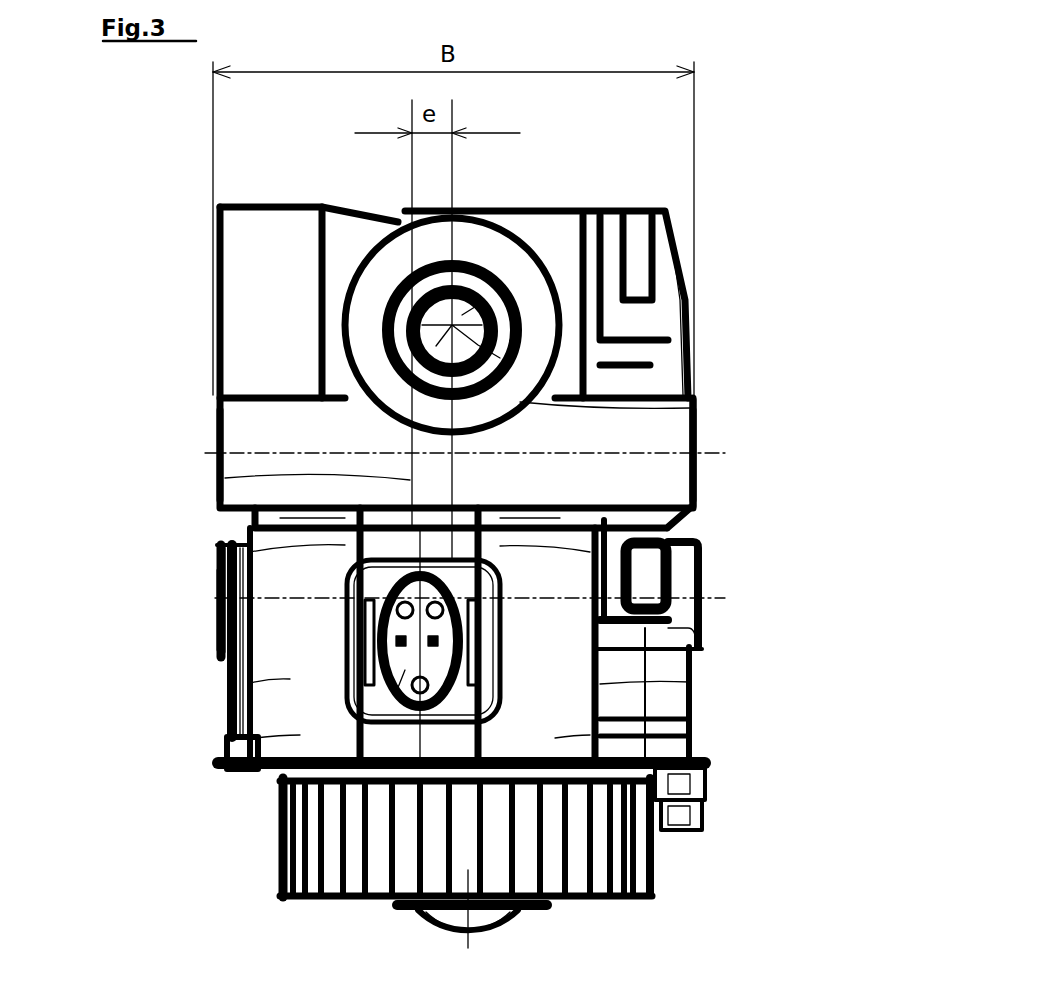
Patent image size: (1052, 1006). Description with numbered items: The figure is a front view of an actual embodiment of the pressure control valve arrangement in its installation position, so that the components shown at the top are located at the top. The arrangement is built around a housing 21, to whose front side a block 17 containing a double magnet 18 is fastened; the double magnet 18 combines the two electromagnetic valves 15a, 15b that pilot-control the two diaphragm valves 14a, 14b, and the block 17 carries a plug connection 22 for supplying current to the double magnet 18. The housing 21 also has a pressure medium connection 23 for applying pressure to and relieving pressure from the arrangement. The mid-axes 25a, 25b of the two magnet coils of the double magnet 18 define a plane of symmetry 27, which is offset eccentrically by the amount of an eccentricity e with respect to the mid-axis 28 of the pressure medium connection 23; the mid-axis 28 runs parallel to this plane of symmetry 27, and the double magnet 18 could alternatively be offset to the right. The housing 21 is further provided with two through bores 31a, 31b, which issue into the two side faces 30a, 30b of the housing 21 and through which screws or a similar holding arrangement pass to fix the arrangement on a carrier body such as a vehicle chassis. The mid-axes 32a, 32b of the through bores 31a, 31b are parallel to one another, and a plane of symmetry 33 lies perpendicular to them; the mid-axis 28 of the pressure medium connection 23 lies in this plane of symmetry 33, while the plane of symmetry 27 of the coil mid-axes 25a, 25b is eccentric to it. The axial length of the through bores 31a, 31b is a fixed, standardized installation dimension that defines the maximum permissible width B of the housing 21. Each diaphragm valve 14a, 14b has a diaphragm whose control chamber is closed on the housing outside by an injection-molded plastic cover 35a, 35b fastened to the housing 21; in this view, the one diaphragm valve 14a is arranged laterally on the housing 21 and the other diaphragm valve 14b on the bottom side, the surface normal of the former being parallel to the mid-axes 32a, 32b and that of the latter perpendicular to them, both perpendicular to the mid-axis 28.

The diaphragm valve 14a is at (705, 330).
The diaphragm valve 14b is at (326, 916).
The electromagnetic valve 15a is at (562, 688).
The electromagnetic valve 15b is at (240, 700).
The block 17 is at (565, 735).
The double magnet 18 is at (235, 752).
The housing 21 is at (738, 780).
The plug connection 22 is at (372, 728).
The pressure medium connection 23 is at (500, 278).
The mid-axis of magnet coil 25a is at (655, 550).
The mid-axis of magnet coil 25b is at (240, 556).
The plane of symmetry 27 is at (270, 476).
The mid-axis of pressure medium connection 28 is at (567, 402).
The side face 30a is at (748, 498).
The side face 30b is at (183, 626).
The through bore 31a is at (193, 437).
The through bore 31b is at (197, 591).
The mid-axis of through bore 32a is at (215, 453).
The mid-axis of through bore 32b is at (718, 598).
The plane of symmetry 33 is at (456, 150).
The cover 35a is at (645, 252).
The cover 35b is at (620, 880).